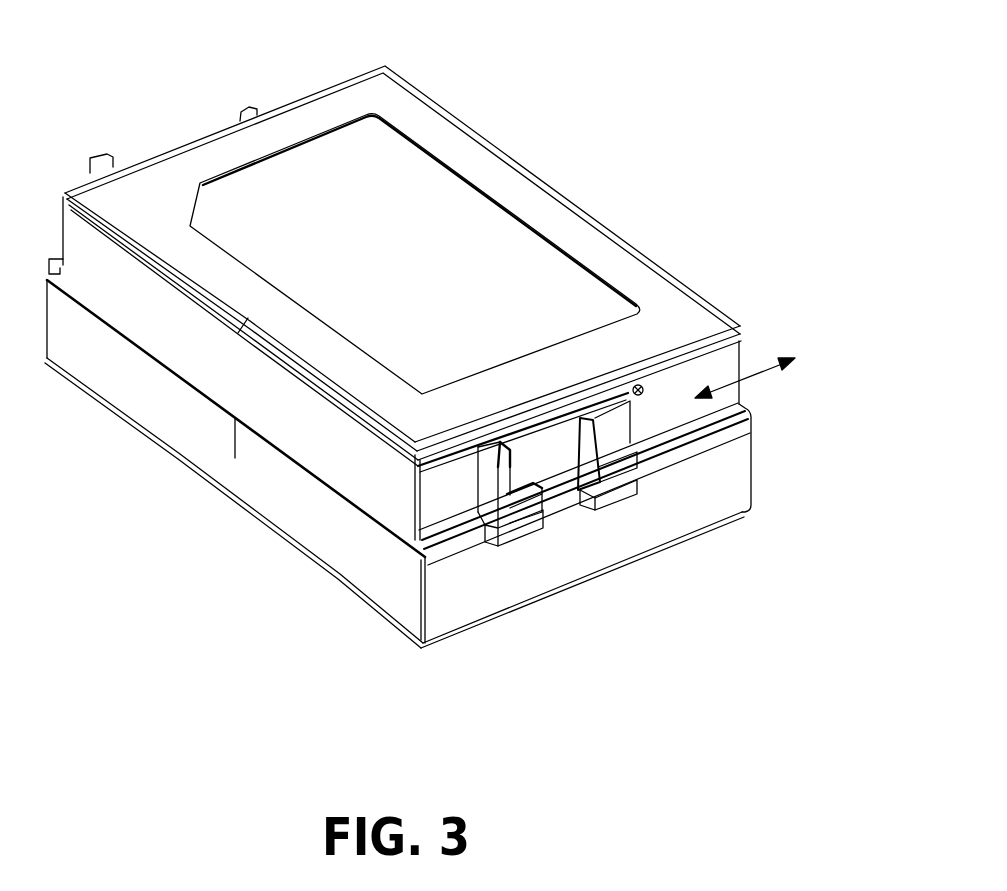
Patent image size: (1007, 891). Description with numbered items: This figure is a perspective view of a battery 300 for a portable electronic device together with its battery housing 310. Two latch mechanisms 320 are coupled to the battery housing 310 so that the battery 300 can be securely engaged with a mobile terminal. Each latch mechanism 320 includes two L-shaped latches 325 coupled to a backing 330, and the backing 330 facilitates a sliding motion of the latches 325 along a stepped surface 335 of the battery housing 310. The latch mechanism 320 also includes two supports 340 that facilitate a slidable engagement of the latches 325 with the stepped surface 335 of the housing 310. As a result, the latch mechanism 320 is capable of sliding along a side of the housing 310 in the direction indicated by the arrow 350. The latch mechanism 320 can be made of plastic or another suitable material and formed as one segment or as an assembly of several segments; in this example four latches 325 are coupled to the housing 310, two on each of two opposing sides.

The battery 300 is at (417, 232).
The battery housing 310 is at (395, 303).
The latch mechanism 320 is at (179, 112).
The L-shaped latch 325 is at (681, 497).
The backing 330 is at (524, 398).
The stepped surface 335 is at (642, 488).
The support 340 is at (550, 545).
The arrow 350 is at (776, 372).